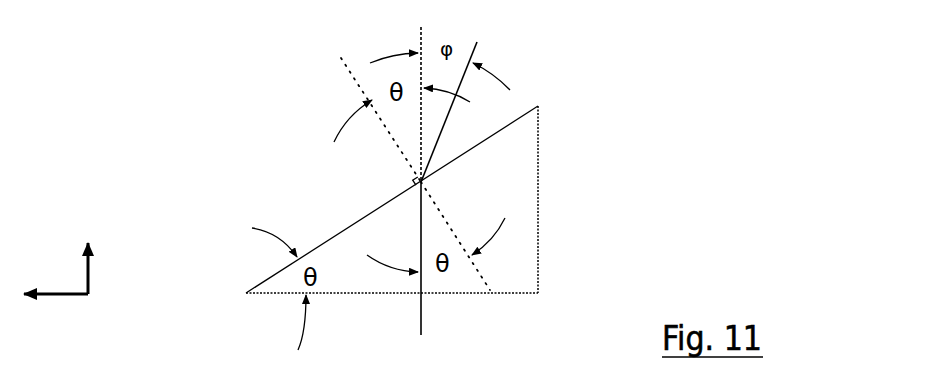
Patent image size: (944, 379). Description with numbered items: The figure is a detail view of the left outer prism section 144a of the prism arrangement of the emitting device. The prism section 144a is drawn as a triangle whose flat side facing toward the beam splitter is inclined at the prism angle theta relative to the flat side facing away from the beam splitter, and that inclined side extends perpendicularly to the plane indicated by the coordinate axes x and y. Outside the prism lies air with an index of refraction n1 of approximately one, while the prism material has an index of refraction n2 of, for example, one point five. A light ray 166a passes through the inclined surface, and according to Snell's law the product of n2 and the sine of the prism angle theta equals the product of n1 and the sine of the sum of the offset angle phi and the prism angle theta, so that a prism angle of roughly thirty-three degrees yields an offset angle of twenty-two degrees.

The outer prism section 144a is at (523, 172).
The refracted light ray 166a is at (477, 42).
The index of refraction for air n1 is at (358, 120).
The index of refraction of the prism material n2 is at (464, 227).
The x axis x is at (88, 266).
The y axis y is at (45, 297).